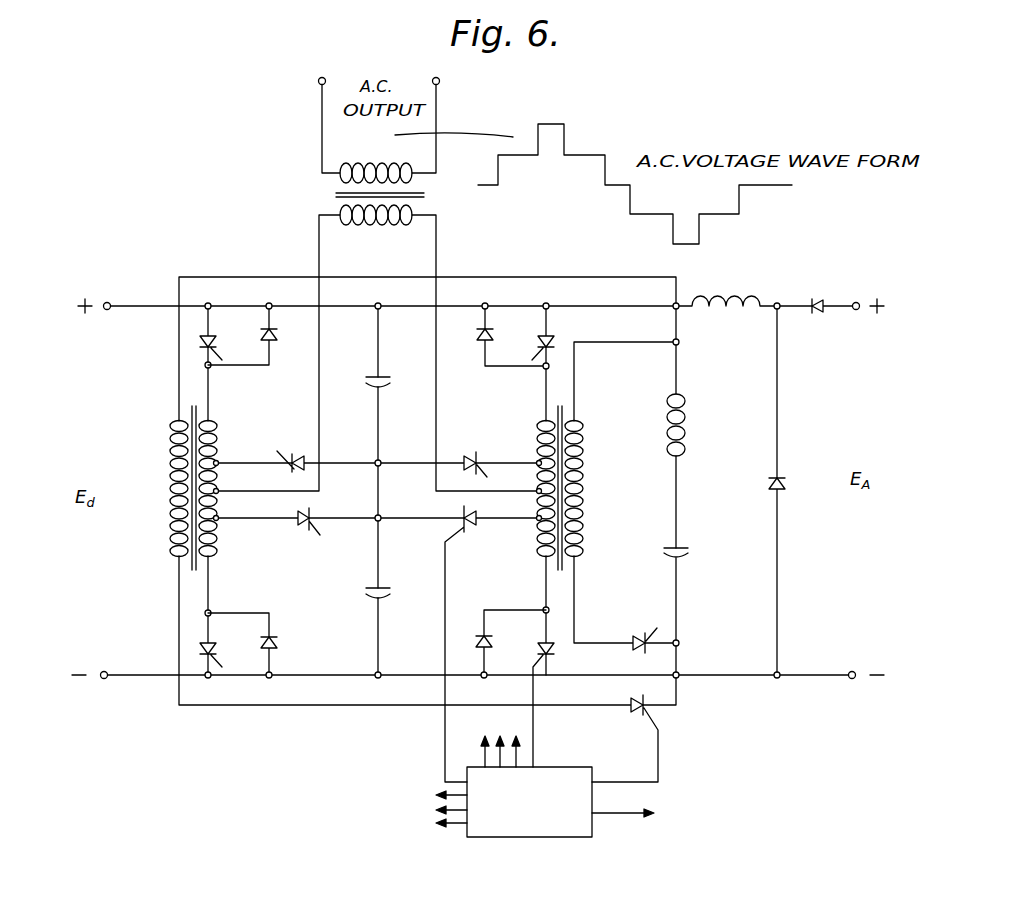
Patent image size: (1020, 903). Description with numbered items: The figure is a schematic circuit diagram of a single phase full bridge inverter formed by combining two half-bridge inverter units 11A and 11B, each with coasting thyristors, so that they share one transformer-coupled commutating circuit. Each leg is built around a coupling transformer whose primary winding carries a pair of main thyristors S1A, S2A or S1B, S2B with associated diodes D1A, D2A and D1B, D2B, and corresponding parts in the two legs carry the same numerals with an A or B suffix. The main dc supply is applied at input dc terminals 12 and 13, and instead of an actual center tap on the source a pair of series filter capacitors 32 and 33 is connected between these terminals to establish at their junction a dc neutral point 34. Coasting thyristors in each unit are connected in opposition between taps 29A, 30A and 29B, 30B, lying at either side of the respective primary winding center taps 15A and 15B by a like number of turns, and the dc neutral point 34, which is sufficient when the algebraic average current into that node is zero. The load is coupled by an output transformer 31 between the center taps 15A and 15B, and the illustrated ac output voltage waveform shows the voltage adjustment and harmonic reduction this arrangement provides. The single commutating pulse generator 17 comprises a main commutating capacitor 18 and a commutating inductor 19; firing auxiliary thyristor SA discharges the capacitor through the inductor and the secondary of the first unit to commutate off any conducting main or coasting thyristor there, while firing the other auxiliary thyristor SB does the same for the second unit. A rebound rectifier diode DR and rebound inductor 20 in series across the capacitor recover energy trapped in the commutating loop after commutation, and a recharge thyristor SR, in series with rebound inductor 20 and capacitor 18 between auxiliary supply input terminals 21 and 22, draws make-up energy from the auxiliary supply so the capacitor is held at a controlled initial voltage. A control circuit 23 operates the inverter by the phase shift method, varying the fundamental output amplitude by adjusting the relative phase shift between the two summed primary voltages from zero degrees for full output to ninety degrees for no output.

The input dc terminal 12 is at (110, 300).
The input dc terminal 13 is at (106, 681).
The first half-bridge inverter unit 11A is at (193, 398).
The second half-bridge inverter unit 11B is at (566, 397).
The tap 29A is at (218, 457).
The tap 29B is at (532, 463).
The primary winding center tap 15A is at (219, 490).
The primary winding center tap 15B is at (537, 490).
The tap 30A is at (218, 522).
The tap 30B is at (537, 519).
The output transformer 31 is at (437, 200).
The series filter capacitor 32 is at (395, 375).
The series filter capacitor 33 is at (396, 592).
The dc neutral point 34 is at (380, 460).
The commutating pulse generator 17 is at (779, 294).
The main commutating capacitor 18 is at (680, 546).
The commutating inductor 19 is at (668, 408).
The rebound inductor 20 is at (715, 298).
The auxiliary supply input terminal 21 is at (858, 299).
The auxiliary supply input terminal 22 is at (854, 680).
The control circuit 23 is at (471, 762).
The main thyristor S1A is at (223, 362).
The feedback diode D1A is at (260, 334).
The main thyristor S2A is at (221, 617).
The feedback diode D2A is at (264, 645).
The main thyristor S1B is at (558, 362).
The feedback diode D1B is at (494, 334).
The main thyristor S2B is at (558, 661).
The feedback diode D2B is at (497, 643).
The auxiliary thyristor SA is at (625, 738).
The auxiliary thyristor SB is at (646, 635).
The recharge thyristor SR is at (826, 316).
The rebound rectifier diode DR is at (792, 578).